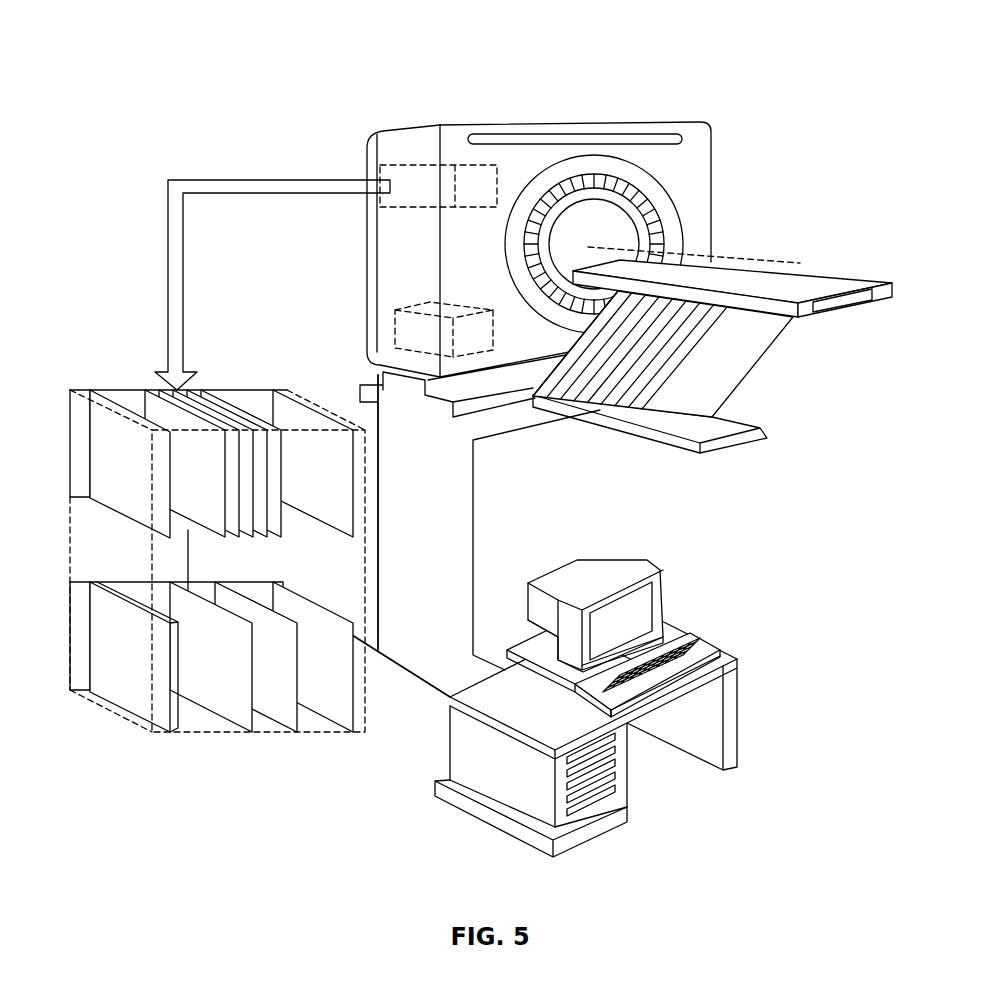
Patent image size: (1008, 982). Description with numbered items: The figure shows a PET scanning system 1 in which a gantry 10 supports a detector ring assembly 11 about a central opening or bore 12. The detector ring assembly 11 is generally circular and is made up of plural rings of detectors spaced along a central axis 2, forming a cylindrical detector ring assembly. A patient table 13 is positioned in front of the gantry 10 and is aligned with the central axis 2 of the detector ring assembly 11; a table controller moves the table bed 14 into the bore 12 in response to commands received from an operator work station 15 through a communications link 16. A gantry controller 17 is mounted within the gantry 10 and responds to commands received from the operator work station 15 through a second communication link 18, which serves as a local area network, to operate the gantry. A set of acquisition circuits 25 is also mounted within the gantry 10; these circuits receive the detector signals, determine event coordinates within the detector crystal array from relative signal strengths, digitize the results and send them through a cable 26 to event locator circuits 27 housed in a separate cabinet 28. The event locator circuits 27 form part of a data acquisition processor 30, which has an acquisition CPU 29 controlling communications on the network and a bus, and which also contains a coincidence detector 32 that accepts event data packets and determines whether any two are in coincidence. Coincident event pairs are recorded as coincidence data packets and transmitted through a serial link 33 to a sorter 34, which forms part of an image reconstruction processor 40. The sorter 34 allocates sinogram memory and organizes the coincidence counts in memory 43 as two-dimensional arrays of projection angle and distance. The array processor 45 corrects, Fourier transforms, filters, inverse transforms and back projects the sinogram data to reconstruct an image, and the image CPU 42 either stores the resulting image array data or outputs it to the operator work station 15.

The PET scanning system 1 is at (166, 65).
The central axis 2 is at (783, 260).
The gantry 10 is at (712, 170).
The detector ring assembly 11 is at (656, 226).
The bore 12 is at (613, 238).
The patient table 13 is at (767, 352).
The table bed 14 is at (827, 287).
The operator work station 15 is at (660, 562).
The communications link 16 is at (475, 503).
The gantry controller 17 is at (425, 303).
The second communication link 18 is at (380, 558).
The acquisition circuits 25 is at (403, 163).
The cable 26 is at (185, 300).
The event locator circuits 27 is at (181, 489).
The cabinet 28 is at (207, 733).
The acquisition CPU 29 is at (301, 489).
The data acquisition processor 30 is at (217, 431).
The coincidence detector 32 is at (108, 472).
The serial link 33 is at (190, 547).
The sorter 34 is at (108, 665).
The image reconstruction processor 40 is at (192, 635).
The image CPU 42 is at (311, 679).
The memory 43 is at (198, 667).
The array processor 45 is at (258, 679).